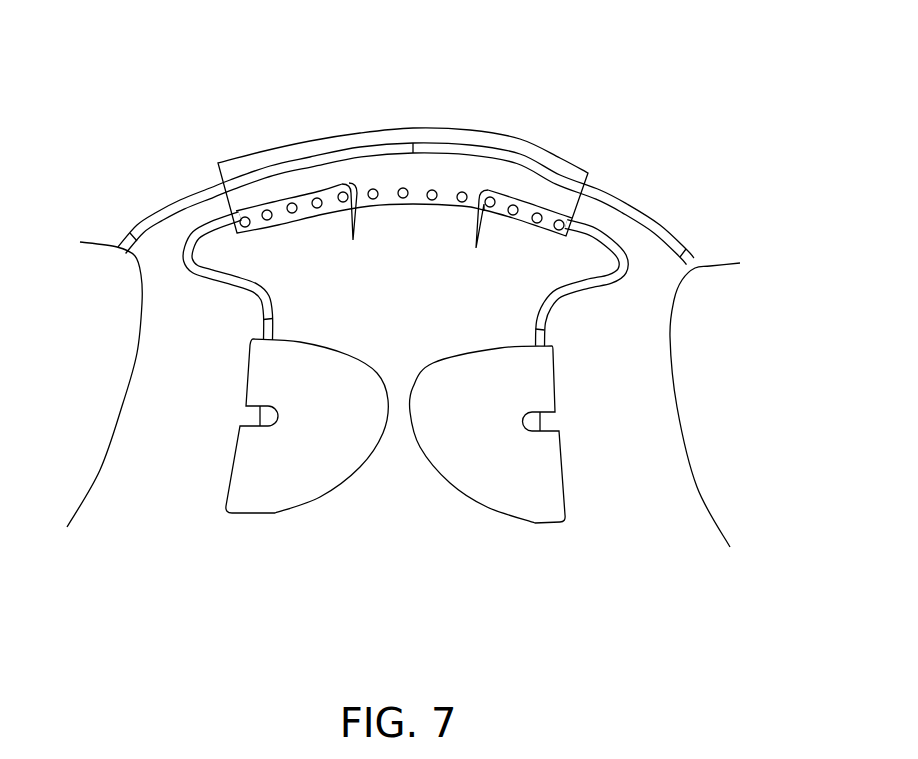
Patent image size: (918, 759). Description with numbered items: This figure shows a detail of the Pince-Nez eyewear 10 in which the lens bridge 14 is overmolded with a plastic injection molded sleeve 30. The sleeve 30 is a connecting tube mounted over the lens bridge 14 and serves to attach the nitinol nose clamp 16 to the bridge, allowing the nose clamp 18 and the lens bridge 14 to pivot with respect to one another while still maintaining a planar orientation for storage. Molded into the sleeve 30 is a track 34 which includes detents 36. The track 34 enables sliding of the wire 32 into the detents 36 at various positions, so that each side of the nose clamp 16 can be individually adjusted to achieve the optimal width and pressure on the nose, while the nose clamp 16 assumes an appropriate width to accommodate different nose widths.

The eyewear 10 is at (382, 60).
The lens bridge 14 is at (627, 204).
The nose clamp 16 is at (247, 286).
The nose clamp 18 is at (323, 498).
The sleeve 30 is at (502, 136).
The wire 32 is at (470, 255).
The track 34 is at (542, 239).
The detents 36 is at (432, 201).